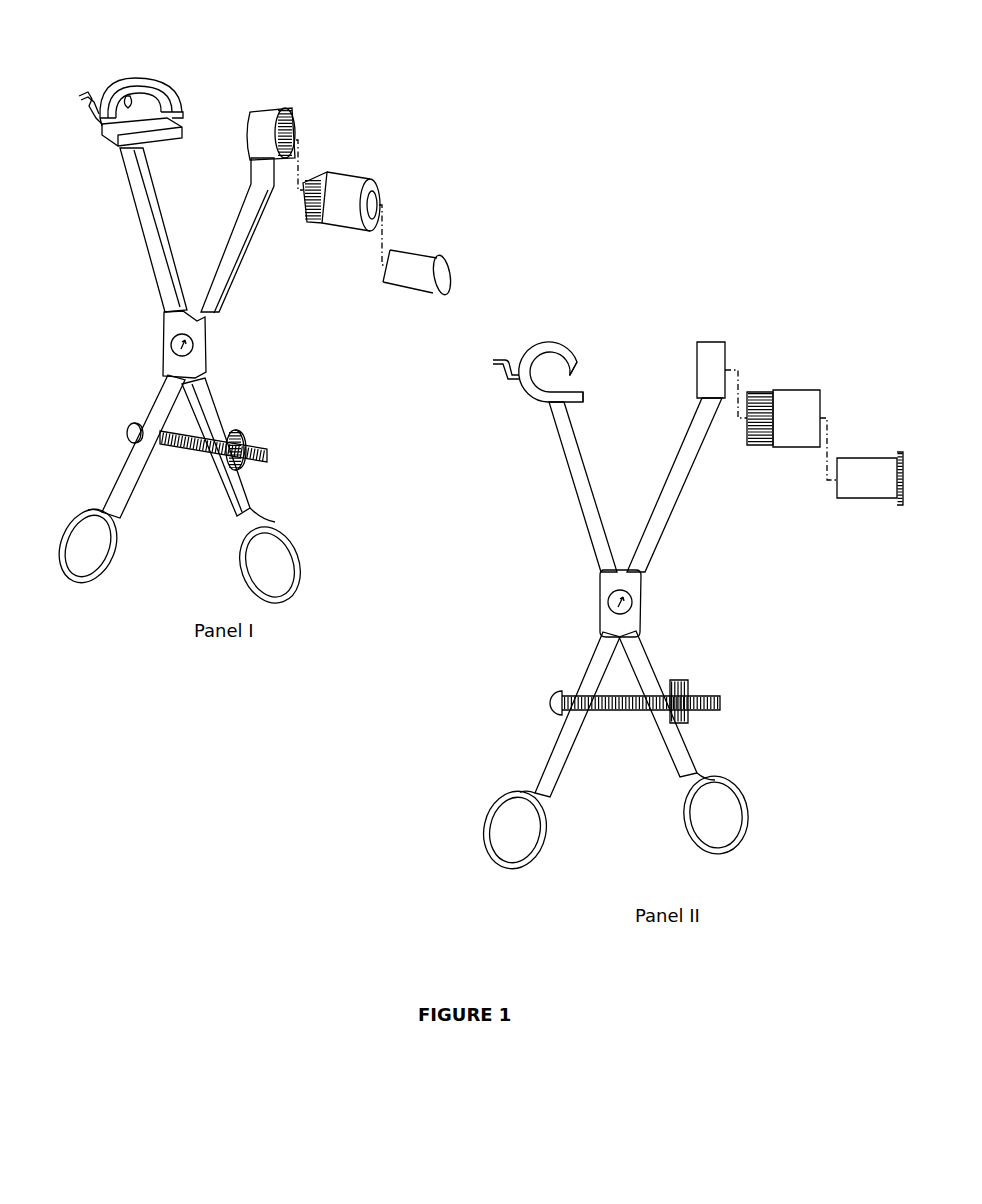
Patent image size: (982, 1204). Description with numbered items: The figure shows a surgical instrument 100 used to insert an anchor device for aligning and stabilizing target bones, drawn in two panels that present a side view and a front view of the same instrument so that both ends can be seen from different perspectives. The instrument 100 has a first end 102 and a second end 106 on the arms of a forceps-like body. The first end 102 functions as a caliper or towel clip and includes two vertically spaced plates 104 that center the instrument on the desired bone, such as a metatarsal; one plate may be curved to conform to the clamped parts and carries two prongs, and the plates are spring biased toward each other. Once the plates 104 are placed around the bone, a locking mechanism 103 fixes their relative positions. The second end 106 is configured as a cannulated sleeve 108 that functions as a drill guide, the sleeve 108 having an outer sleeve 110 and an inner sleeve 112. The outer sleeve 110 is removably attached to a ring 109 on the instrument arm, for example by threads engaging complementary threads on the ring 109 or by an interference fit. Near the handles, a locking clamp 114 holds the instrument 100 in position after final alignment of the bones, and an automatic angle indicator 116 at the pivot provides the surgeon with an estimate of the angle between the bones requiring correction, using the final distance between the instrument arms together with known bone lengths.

The surgical instrument 100 is at (68, 34).
The first end 102 is at (168, 83).
The locking mechanism 103 is at (84, 101).
The vertically spaced plates 104 is at (183, 113).
The second end 106 is at (292, 107).
The cannulated sleeve 108 is at (422, 288).
The ring 109 is at (257, 112).
The outer sleeve 110 is at (348, 171).
The inner sleeve 112 is at (381, 266).
The locking clamp 114 is at (253, 448).
The automatic angle indicator 116 is at (192, 347).